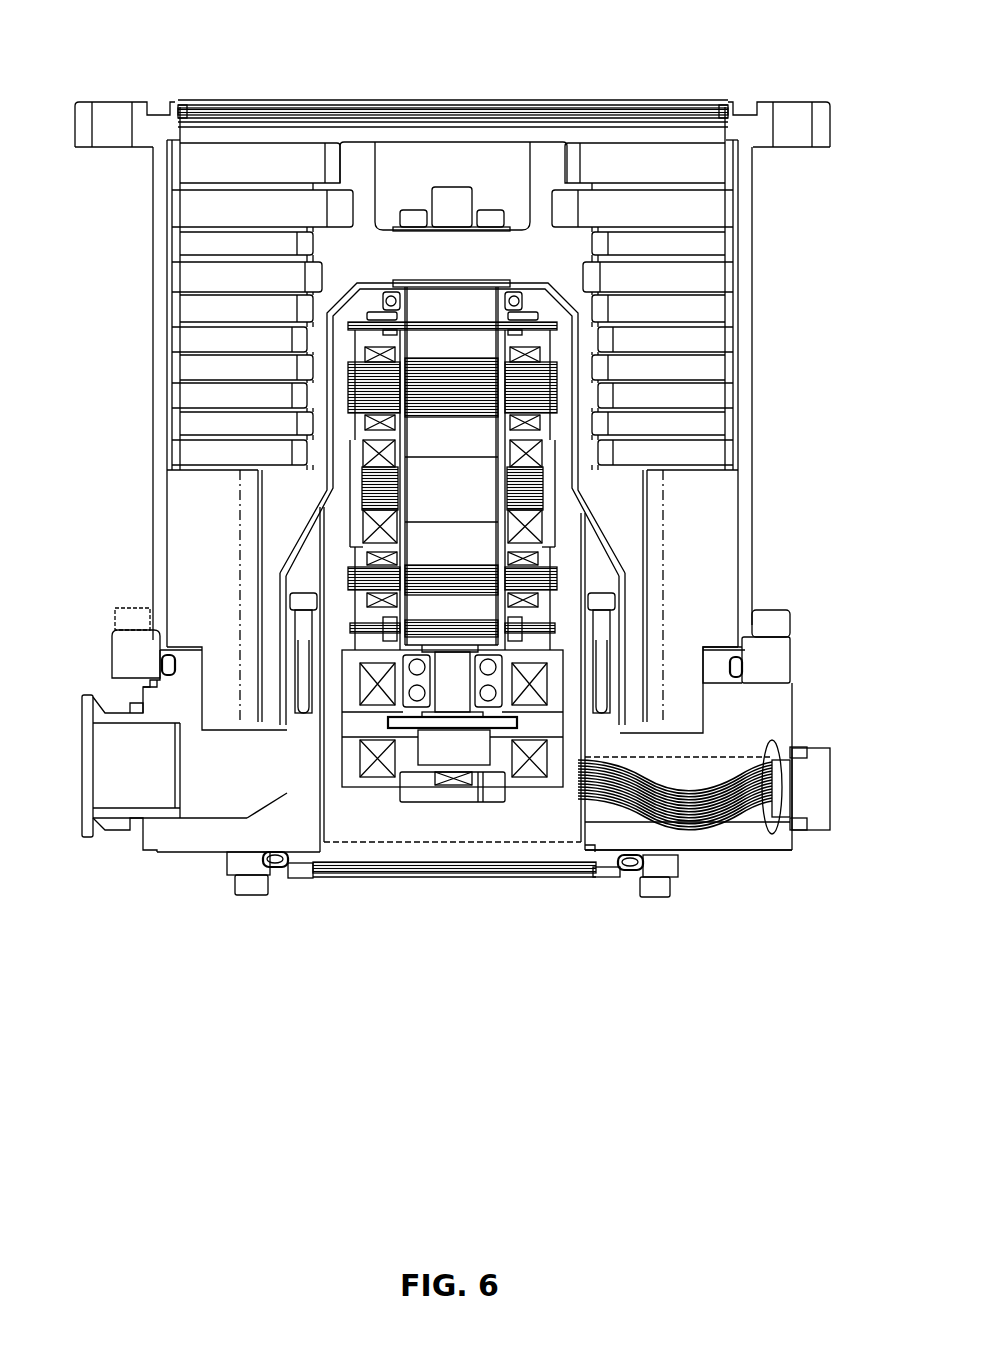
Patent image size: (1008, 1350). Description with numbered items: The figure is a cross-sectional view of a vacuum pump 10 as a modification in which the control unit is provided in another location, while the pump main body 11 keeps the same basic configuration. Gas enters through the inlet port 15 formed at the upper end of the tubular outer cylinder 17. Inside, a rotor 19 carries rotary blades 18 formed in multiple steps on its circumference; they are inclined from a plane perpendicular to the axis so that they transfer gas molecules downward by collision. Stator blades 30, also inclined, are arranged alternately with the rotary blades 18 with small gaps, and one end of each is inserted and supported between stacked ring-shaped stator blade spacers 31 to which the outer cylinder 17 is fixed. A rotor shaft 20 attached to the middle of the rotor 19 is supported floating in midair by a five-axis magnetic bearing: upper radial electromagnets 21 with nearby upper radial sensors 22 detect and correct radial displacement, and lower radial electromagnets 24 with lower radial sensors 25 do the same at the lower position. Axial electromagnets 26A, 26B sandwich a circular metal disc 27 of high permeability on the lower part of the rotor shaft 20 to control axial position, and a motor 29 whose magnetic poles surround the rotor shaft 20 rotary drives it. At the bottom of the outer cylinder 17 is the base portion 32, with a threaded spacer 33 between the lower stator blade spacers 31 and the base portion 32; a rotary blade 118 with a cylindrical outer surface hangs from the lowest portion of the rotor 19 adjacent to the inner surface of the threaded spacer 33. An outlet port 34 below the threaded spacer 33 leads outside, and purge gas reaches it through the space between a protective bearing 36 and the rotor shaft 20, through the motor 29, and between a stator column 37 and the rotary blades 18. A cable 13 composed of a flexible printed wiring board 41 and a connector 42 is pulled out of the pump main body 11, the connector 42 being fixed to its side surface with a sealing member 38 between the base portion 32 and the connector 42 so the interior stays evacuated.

The vacuum pump 10 is at (450, 76).
The pump main body 11 is at (752, 181).
The cable 13 is at (737, 818).
The inlet port 15 is at (487, 162).
The outer cylinder 17 is at (748, 306).
The rotary blades 18 is at (198, 160).
The rotor 19 is at (378, 186).
The rotor shaft 20 is at (487, 440).
The upper radial electromagnets 21 is at (555, 368).
The upper radial sensors 22 is at (515, 316).
The lower radial electromagnets 24 is at (565, 575).
The lower radial sensors 25 is at (640, 632).
The axial electromagnet 26A is at (735, 668).
The axial electromagnet 26B is at (551, 760).
The metal disc 27 is at (517, 722).
The motor 29 is at (565, 490).
The stator blades 30 is at (190, 203).
The stator blade spacers 31 is at (170, 185).
The base portion 32 is at (760, 727).
The threaded spacer 33 is at (730, 500).
The outlet port 34 is at (95, 757).
The protective bearing 36 is at (415, 670).
The stator column 37 is at (565, 540).
The sealing member 38 is at (787, 830).
The flexible printed wiring board 41 is at (715, 810).
The connector 42 is at (820, 820).
The rotary blade 118 is at (785, 640).